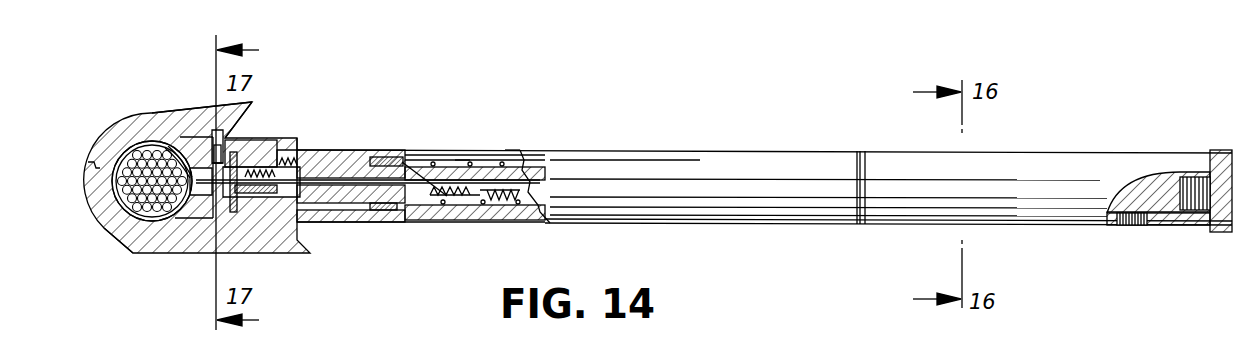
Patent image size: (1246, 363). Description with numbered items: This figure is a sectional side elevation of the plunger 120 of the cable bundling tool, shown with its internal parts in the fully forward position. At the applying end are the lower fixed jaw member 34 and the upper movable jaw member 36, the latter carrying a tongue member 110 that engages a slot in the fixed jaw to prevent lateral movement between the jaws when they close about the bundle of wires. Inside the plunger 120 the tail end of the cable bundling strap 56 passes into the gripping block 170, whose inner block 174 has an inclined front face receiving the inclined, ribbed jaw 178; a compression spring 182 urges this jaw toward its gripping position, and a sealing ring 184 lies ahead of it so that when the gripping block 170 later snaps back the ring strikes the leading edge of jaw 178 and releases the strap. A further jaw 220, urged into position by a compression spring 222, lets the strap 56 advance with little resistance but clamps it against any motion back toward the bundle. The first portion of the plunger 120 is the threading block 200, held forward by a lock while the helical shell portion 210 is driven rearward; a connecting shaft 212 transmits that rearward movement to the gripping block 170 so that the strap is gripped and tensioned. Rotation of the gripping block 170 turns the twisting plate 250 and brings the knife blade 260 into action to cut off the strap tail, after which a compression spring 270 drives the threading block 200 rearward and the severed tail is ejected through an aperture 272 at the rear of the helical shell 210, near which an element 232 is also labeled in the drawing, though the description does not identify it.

The lower fixed jaw member 34 is at (173, 103).
The upper movable jaw member 36 is at (97, 234).
The cable bundling strap 56 is at (402, 162).
The tongue member 110 is at (178, 177).
The plunger 120 is at (593, 76).
The gripping block 170 is at (394, 224).
The inner block 174 is at (347, 162).
The jaw 178 is at (278, 147).
The compression spring 182 is at (421, 154).
The sealing ring 184 is at (240, 156).
The threading block 200 is at (764, 173).
The helical shell portion 210 is at (946, 178).
The connecting shaft 212 is at (531, 138).
The further jaw 220 is at (455, 219).
The compression spring 222 is at (507, 219).
The knurled nut 232 is at (1158, 233).
The twisting plate 250 is at (228, 203).
The knife blade 260 is at (247, 215).
The compression spring 270 is at (481, 135).
The aperture 272 is at (1158, 170).